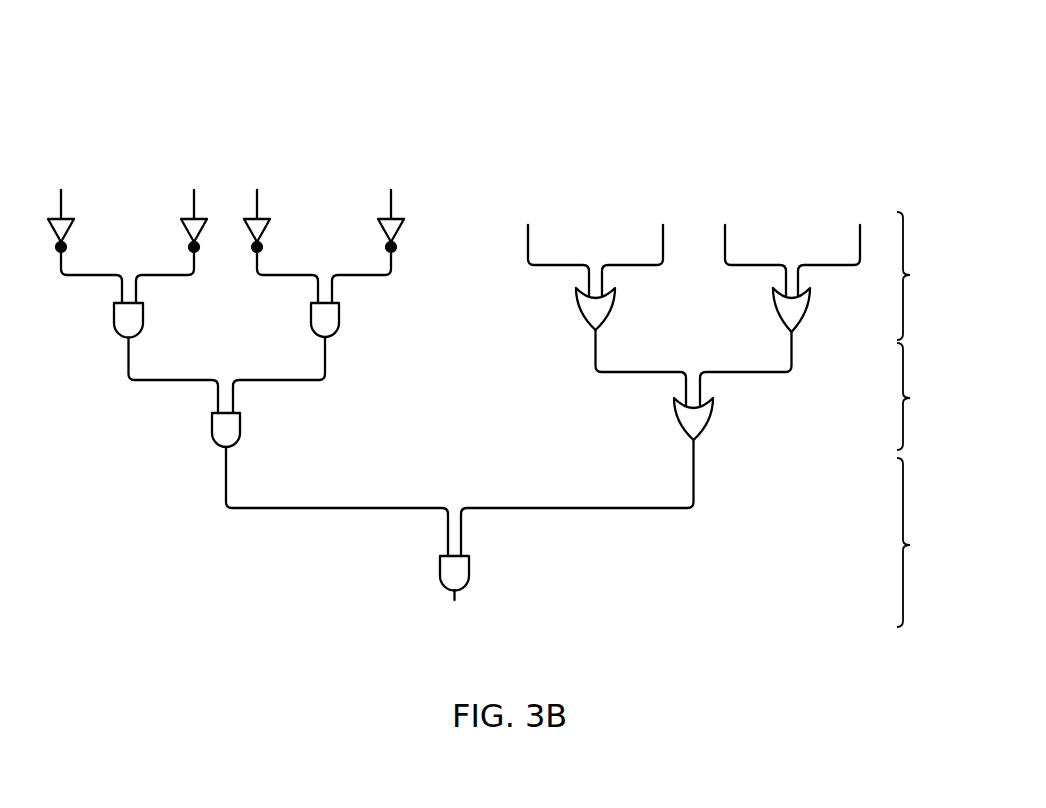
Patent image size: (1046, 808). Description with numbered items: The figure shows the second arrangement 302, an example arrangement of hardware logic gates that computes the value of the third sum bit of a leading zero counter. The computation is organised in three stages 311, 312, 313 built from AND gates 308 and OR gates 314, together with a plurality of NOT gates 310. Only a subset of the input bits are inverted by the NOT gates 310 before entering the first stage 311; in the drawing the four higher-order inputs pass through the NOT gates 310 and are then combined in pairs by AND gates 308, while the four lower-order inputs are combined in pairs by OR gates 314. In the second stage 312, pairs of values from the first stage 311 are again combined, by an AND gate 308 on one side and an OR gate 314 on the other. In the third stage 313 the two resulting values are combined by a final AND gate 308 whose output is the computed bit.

The second arrangement 302 is at (460, 354).
The AND gate 308 is at (233, 428).
The NOT gate 310 is at (198, 228).
The first stage 311 is at (928, 276).
The second stage 312 is at (928, 396).
The third stage 313 is at (928, 542).
The OR gate 314 is at (695, 427).